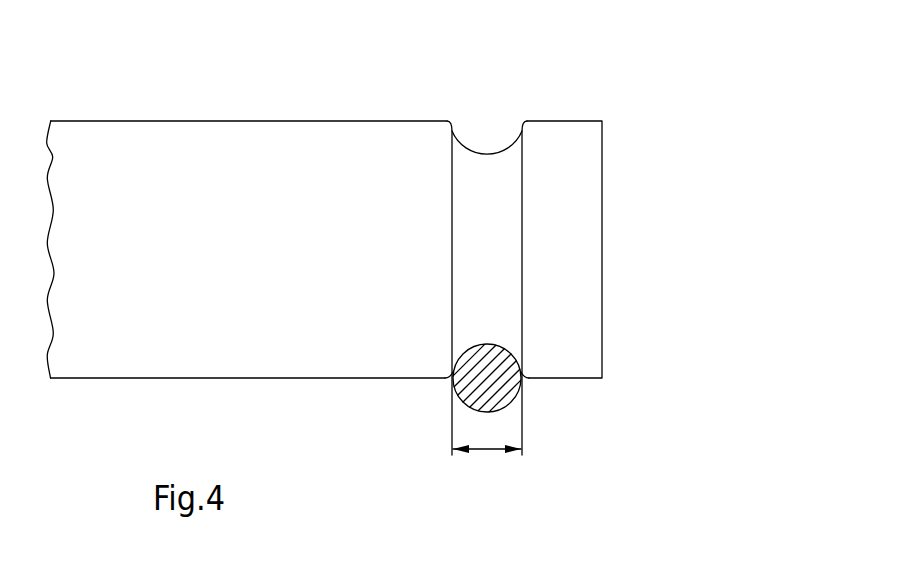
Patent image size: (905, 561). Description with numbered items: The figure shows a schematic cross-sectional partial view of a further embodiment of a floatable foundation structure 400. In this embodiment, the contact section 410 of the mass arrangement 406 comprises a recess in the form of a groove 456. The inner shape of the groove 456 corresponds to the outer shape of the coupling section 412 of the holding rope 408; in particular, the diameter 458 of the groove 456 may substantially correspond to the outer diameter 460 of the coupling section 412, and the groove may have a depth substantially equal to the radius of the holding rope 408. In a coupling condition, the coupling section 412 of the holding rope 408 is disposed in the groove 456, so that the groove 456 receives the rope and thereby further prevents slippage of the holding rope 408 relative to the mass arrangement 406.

The floatable foundation structure 400 is at (652, 73).
The mass arrangement 406 is at (195, 103).
The holding rope 408 is at (495, 388).
The contact section 410 is at (630, 253).
The coupling section 412 is at (448, 393).
The groove 456 is at (485, 137).
The diameter of the groove 458 is at (482, 450).
The outer diameter of the coupling section 460 is at (490, 450).